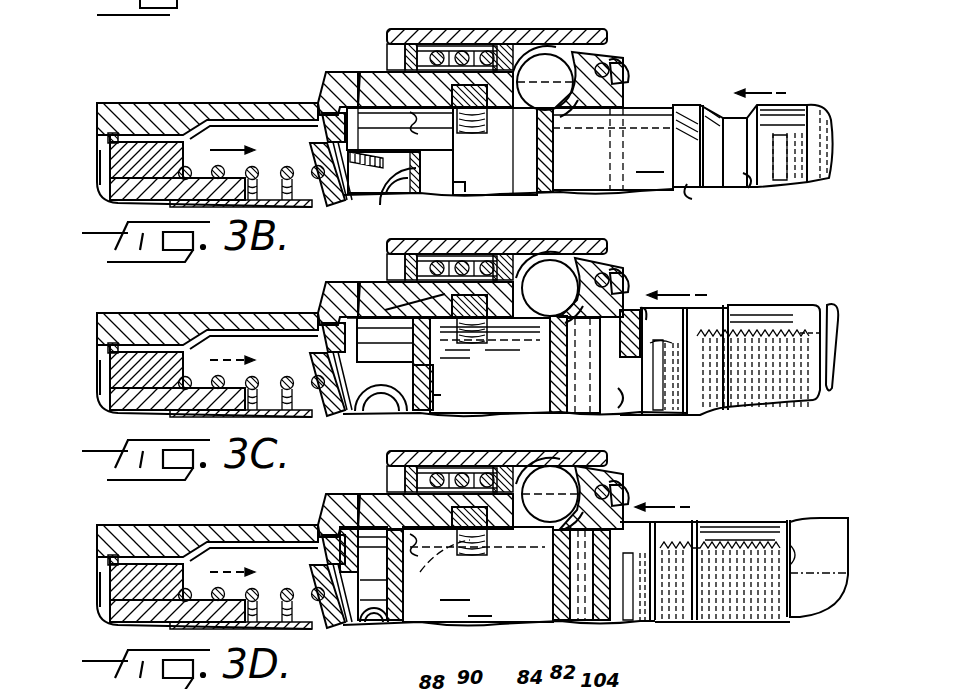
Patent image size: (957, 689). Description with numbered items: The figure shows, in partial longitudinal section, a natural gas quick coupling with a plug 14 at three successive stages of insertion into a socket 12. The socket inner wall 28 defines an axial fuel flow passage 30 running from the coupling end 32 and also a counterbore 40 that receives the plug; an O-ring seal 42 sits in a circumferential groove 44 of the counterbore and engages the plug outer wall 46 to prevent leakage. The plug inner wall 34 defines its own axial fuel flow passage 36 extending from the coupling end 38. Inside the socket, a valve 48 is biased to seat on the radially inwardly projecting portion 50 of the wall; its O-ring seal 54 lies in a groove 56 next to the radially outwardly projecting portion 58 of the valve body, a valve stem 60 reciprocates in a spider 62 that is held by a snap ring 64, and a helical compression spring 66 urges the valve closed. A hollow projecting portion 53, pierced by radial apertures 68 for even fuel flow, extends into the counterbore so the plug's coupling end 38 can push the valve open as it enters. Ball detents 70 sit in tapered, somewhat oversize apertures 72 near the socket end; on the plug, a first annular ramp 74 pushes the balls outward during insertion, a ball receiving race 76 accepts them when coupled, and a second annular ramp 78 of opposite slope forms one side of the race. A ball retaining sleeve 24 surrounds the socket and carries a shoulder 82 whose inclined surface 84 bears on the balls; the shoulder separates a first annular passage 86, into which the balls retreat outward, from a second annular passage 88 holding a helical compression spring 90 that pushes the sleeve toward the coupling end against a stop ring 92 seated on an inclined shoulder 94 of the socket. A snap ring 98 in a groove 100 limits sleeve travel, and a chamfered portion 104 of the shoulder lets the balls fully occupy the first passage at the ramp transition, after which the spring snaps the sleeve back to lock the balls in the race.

In FIG. 3B, the socket 12 is at (150, 112).
In FIG. 3C, the socket 12 is at (207, 354).
In FIG. 3D, the socket 12 is at (207, 566).
In FIG. 3B, the plug 14 is at (790, 105).
In FIG. 3C, the plug 14 is at (780, 308).
In FIG. 3D, the plug 14 is at (770, 522).
In FIG. 3B, the sleeve 24 is at (590, 50).
In FIG. 3C, the sleeve 24 is at (602, 264).
In FIG. 3D, the sleeve 24 is at (600, 477).
In FIG. 3B, the socket inner wall 28 is at (417, 123).
In FIG. 3D, the socket inner wall 28 is at (410, 534).
In FIG. 3B, the axial fuel flow passage 30 is at (290, 162).
In FIG. 3C, the axial fuel flow passage 30 is at (250, 362).
In FIG. 3D, the axial fuel flow passage 30 is at (250, 574).
In FIG. 3C, the coupling end 32 is at (646, 332).
In FIG. 3B, the plug inner wall 34 is at (600, 140).
In FIG. 3D, the plug inner wall 34 is at (430, 555).
In FIG. 3B, the axial fuel flow passage 36 is at (654, 147).
In FIG. 3D, the axial fuel flow passage 36 is at (466, 606).
In FIG. 3B, the coupling end 38 is at (515, 168).
In FIG. 3C, the coupling end 38 is at (436, 395).
In FIG. 3D, the coupling end 38 is at (415, 618).
In FIG. 3B, the counterbore 40 is at (370, 119).
In FIG. 3C, the counterbore 40 is at (380, 341).
In FIG. 3D, the counterbore 40 is at (370, 528).
In FIG. 3B, the O-ring seal 42 is at (475, 130).
In FIG. 3C, the O-ring seal 42 is at (455, 330).
In FIG. 3D, the O-ring seal 42 is at (477, 552).
In FIG. 3B, the circumferential groove 44 is at (458, 191).
In FIG. 3B, the plug outer wall 46 is at (676, 106).
In FIG. 3C, the plug outer wall 46 is at (415, 330).
In FIG. 3B, the valve 48 is at (326, 205).
In FIG. 3C, the valve 48 is at (322, 397).
In FIG. 3D, the valve 48 is at (324, 608).
In FIG. 3B, the radially inwardly projecting portion 50 is at (325, 100).
In FIG. 3C, the radially inwardly projecting portion 50 is at (318, 303).
In FIG. 3D, the radially inwardly projecting portion 50 is at (318, 515).
In FIG. 3B, the projecting portion of valve body 53 is at (410, 176).
In FIG. 3C, the projecting portion of valve body 53 is at (428, 386).
In FIG. 3D, the projecting portion of valve body 53 is at (390, 597).
In FIG. 3B, the O-ring seal 54 is at (375, 97).
In FIG. 3C, the O-ring seal 54 is at (424, 301).
In FIG. 3D, the O-ring seal 54 is at (424, 511).
In FIG. 3B, the groove 56 is at (349, 203).
In FIG. 3C, the groove 56 is at (345, 395).
In FIG. 3D, the groove 56 is at (347, 605).
In FIG. 3B, the radially outwardly projecting portion 58 is at (330, 130).
In FIG. 3C, the radially outwardly projecting portion 58 is at (316, 337).
In FIG. 3D, the radially outwardly projecting portion 58 is at (316, 549).
In FIG. 3B, the valve stem 60 is at (150, 206).
In FIG. 3C, the valve stem 60 is at (199, 409).
In FIG. 3D, the valve stem 60 is at (199, 621).
In FIG. 3B, the spider 62 is at (100, 170).
In FIG. 3C, the spider 62 is at (76, 377).
In FIG. 3D, the spider 62 is at (76, 589).
In FIG. 3B, the snap ring 64 is at (107, 139).
In FIG. 3C, the snap ring 64 is at (86, 348).
In FIG. 3D, the snap ring 64 is at (86, 560).
In FIG. 3B, the helical compression spring 66 is at (186, 172).
In FIG. 3C, the helical compression spring 66 is at (148, 370).
In FIG. 3D, the helical compression spring 66 is at (148, 582).
In FIG. 3B, the apertures 68 is at (386, 199).
In FIG. 3C, the apertures 68 is at (382, 407).
In FIG. 3D, the apertures 68 is at (378, 624).
In FIG. 3B, the ball detents 70 is at (609, 65).
In FIG. 3C, the ball detents 70 is at (629, 258).
In FIG. 3D, the ball detents 70 is at (621, 473).
In FIG. 3B, the apertures 72 is at (485, 100).
In FIG. 3C, the apertures 72 is at (469, 306).
In FIG. 3D, the apertures 72 is at (493, 548).
In FIG. 3B, the first annular ramp 74 is at (701, 198).
In FIG. 3C, the first annular ramp 74 is at (550, 368).
In FIG. 3D, the first annular ramp 74 is at (550, 618).
In FIG. 3B, the ball receiving race 76 is at (752, 194).
In FIG. 3C, the ball receiving race 76 is at (614, 394).
In FIG. 3D, the ball receiving race 76 is at (608, 618).
In FIG. 3C, the second annular ramp 78 is at (584, 365).
In FIG. 3D, the second annular ramp 78 is at (579, 575).
In FIG. 3B, the shoulder 82 is at (536, 58).
In FIG. 3D, the shoulder 82 is at (549, 475).
In FIG. 3B, the inclined surface 84 is at (504, 70).
In FIG. 3C, the inclined surface 84 is at (510, 244).
In FIG. 3D, the inclined surface 84 is at (509, 458).
In FIG. 3C, the first annular passage 86 is at (549, 266).
In FIG. 3B, the second annular passage 88 is at (420, 33).
In FIG. 3C, the second annular passage 88 is at (489, 235).
In FIG. 3D, the second annular passage 88 is at (488, 448).
In FIG. 3B, the helical compression spring 90 is at (465, 46).
In FIG. 3C, the helical compression spring 90 is at (457, 246).
In FIG. 3D, the helical compression spring 90 is at (457, 459).
In FIG. 3B, the stop ring 92 is at (395, 60).
In FIG. 3C, the stop ring 92 is at (380, 268).
In FIG. 3D, the stop ring 92 is at (380, 478).
In FIG. 3C, the inclined shoulder 94 is at (411, 300).
In FIG. 3B, the snap ring 98 is at (622, 63).
In FIG. 3C, the snap ring 98 is at (640, 261).
In FIG. 3D, the snap ring 98 is at (636, 477).
In FIG. 3B, the groove 100 is at (626, 78).
In FIG. 3C, the groove 100 is at (646, 285).
In FIG. 3D, the groove 100 is at (651, 491).
In FIG. 3B, the chamfered portion 104 is at (556, 55).
In FIG. 3C, the chamfered portion 104 is at (550, 288).
In FIG. 3D, the chamfered portion 104 is at (561, 474).